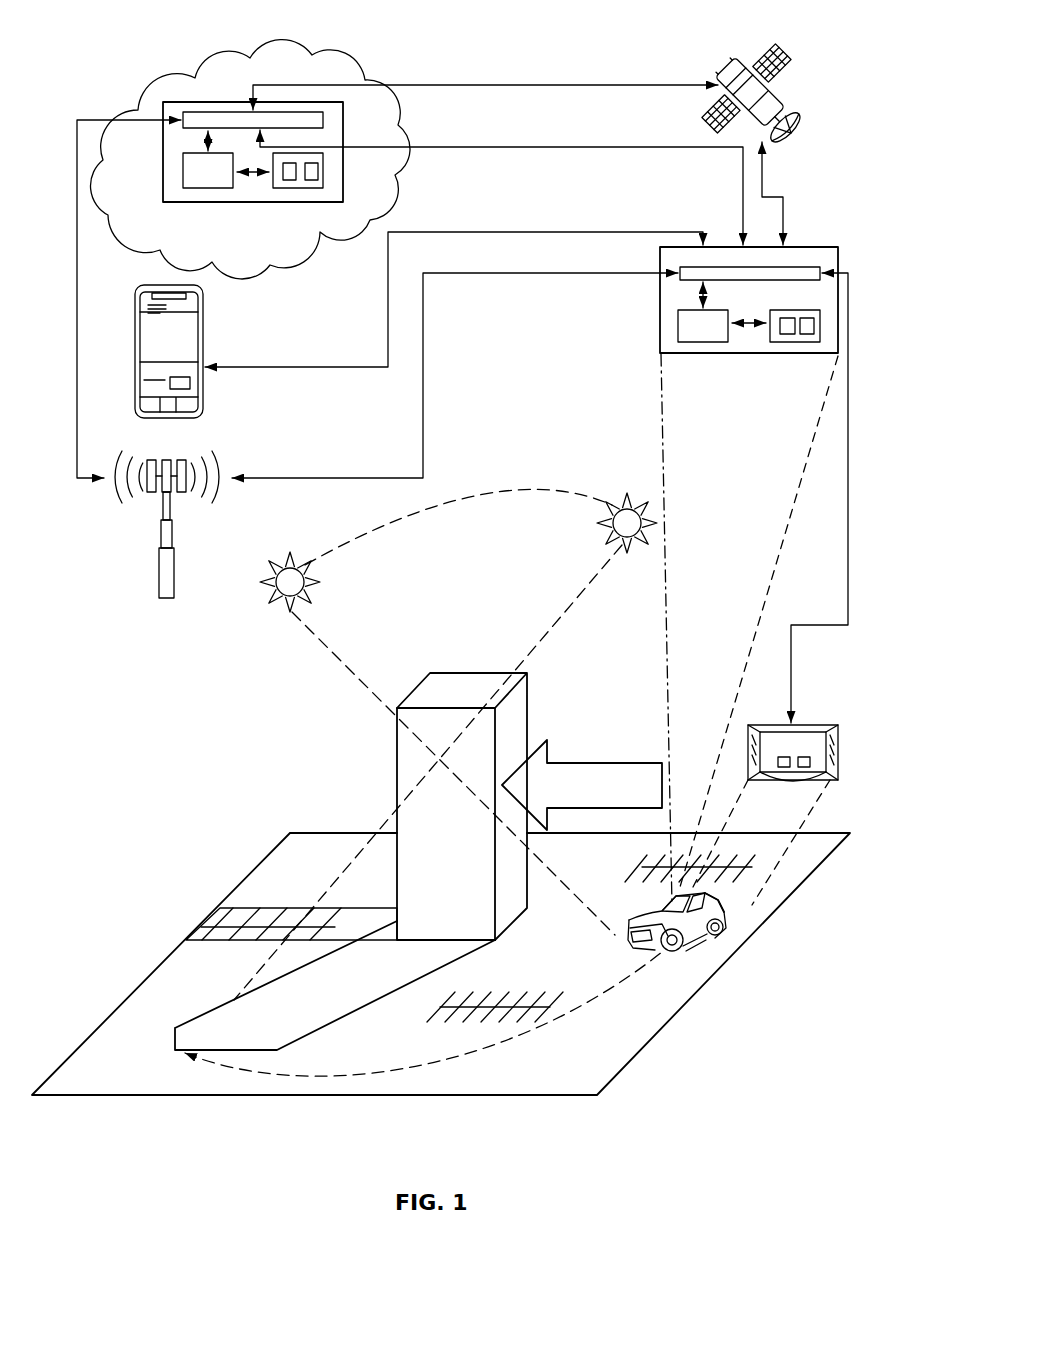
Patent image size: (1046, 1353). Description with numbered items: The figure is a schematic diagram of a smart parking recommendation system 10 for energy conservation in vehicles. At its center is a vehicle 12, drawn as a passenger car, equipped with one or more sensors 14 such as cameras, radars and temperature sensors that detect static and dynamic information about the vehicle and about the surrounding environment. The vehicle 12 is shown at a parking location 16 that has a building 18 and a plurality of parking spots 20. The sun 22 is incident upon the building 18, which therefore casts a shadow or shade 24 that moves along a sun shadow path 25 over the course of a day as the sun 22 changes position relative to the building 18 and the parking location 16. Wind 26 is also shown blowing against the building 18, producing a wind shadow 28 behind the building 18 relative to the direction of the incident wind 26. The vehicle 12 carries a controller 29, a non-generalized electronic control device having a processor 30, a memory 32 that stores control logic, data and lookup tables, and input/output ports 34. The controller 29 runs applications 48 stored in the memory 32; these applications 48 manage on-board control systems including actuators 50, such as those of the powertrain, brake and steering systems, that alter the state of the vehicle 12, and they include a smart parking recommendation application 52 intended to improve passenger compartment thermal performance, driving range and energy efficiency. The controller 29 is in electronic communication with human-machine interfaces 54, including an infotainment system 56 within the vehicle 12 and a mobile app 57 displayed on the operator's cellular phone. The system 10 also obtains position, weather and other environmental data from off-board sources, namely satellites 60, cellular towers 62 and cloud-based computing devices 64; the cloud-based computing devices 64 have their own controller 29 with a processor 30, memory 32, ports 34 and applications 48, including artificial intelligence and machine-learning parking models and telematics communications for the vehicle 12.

The smart parking recommendation system 10 is at (93, 693).
The vehicle 12 is at (731, 935).
The sensors 14 is at (725, 915).
The parking location 16 is at (155, 990).
The building 18 is at (455, 686).
The parking spots 20 is at (662, 866).
The sun 22 is at (270, 578).
The shadow or shade 24 is at (315, 1005).
The sun shadow path 25 is at (488, 1053).
The wind 26 is at (575, 763).
The wind shadow 28 is at (215, 920).
The controller 29 is at (175, 102).
The processor 30 is at (220, 190).
The memory 32 is at (325, 173).
The input/output (I/O) ports 34 is at (208, 112).
The applications 48 is at (312, 190).
The actuators 50 is at (683, 946).
The smart parking recommendation application (SPRA) 52 is at (807, 335).
The human-machine interfaces (HMIs) 54 is at (200, 402).
The infotainment system 56 is at (794, 762).
The mobile application or mobile app 57 is at (185, 345).
The satellites 60 is at (730, 70).
The cellular towers 62 is at (162, 540).
The cloud-based computing devices 64 is at (140, 98).